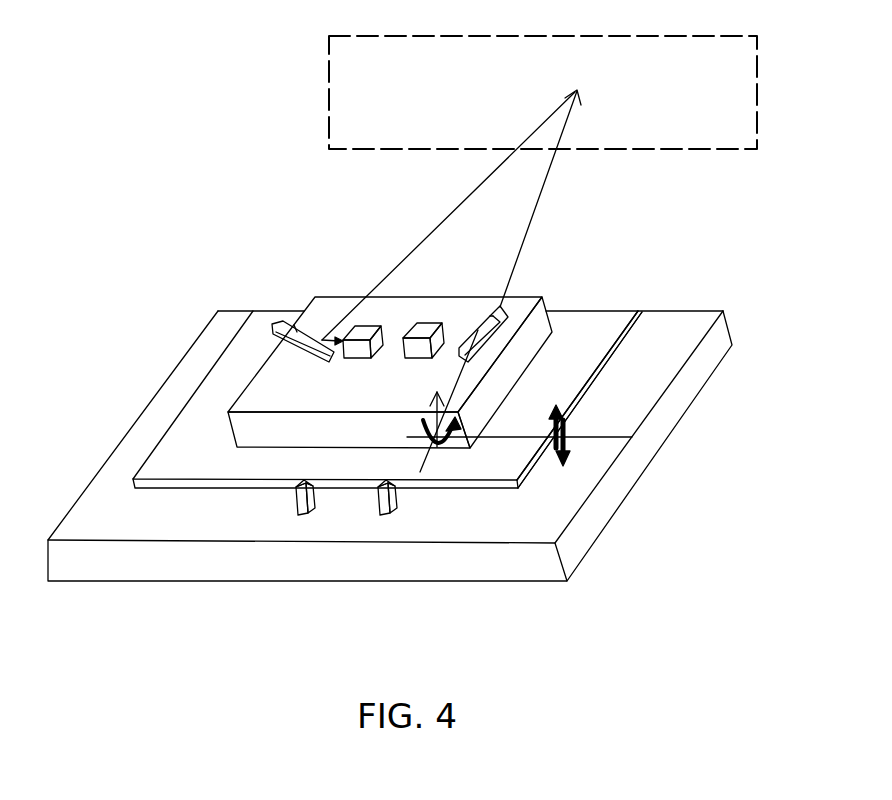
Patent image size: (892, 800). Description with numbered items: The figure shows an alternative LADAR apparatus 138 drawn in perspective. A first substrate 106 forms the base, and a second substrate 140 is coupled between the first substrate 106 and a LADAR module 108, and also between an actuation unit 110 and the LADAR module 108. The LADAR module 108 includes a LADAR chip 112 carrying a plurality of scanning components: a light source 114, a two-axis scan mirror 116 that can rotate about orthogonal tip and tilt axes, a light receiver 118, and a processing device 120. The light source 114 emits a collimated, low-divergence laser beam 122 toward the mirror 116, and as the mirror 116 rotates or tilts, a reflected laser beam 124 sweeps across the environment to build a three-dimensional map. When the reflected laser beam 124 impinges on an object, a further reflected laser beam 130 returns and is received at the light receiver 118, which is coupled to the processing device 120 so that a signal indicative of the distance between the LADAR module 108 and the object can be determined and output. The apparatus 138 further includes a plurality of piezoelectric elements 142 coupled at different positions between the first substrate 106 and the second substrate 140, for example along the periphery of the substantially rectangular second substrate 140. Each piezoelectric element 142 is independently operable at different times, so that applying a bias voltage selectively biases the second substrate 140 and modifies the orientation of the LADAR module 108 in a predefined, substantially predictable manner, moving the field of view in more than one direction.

The first substrate 106 is at (733, 328).
The LADAR module 108 is at (318, 306).
The actuation unit 110 is at (596, 322).
The LADAR chip 112 is at (257, 397).
The light source 114 is at (421, 333).
The two-axis scan mirror 116 is at (500, 308).
The light receiver 118 is at (272, 323).
The processing device 120 is at (360, 333).
The laser beam 122 is at (458, 325).
The reflected laser beam 124 is at (530, 236).
The reflected laser beam 130 is at (450, 207).
The LADAR apparatus 138 is at (222, 152).
The second substrate 140 is at (593, 343).
The piezoelectric elements 142 is at (386, 517).